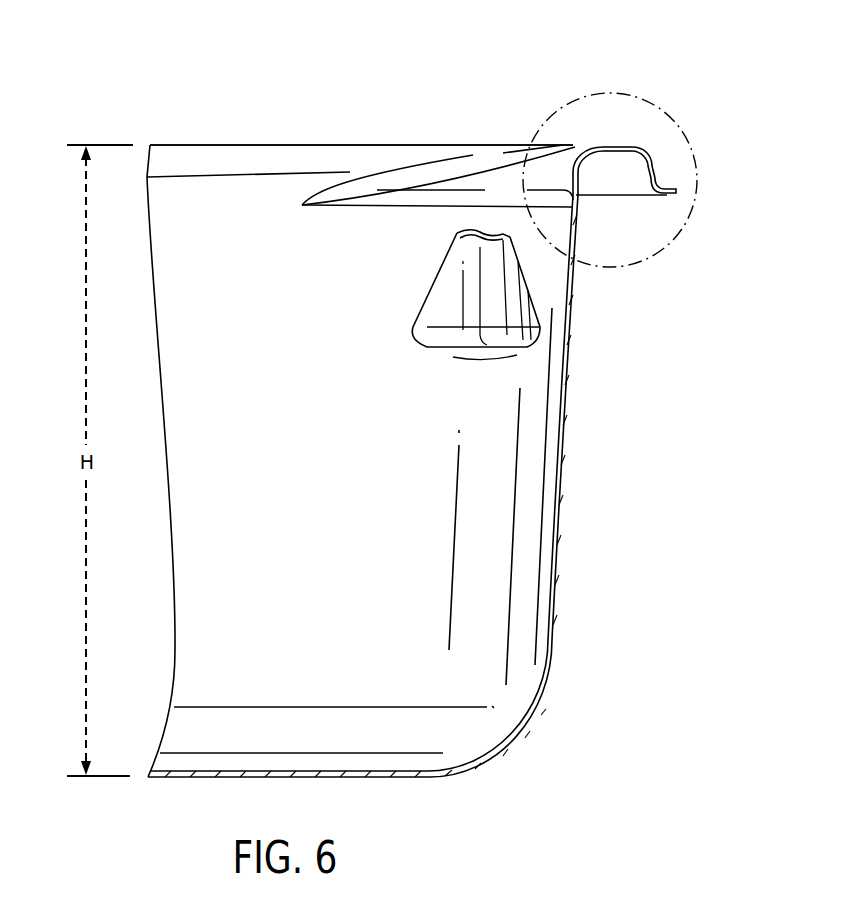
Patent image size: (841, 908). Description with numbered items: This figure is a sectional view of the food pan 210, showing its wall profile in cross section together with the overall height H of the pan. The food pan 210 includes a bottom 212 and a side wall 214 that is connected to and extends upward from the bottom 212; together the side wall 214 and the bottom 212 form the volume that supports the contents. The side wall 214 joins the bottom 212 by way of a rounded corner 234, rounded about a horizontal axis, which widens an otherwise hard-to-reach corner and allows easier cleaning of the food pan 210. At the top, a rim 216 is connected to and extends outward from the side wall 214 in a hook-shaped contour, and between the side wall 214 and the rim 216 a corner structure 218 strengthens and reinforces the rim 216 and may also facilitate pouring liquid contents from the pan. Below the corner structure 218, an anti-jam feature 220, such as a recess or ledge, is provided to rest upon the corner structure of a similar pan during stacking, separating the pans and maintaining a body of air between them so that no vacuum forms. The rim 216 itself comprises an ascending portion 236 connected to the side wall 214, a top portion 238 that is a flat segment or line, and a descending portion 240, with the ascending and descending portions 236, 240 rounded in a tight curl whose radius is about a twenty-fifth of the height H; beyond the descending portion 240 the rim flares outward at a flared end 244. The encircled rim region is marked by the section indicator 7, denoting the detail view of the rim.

The food pan 210 is at (122, 75).
The bottom 212 is at (192, 782).
The side wall 214 is at (564, 503).
The rim 216 is at (291, 160).
The corner structure 218 is at (475, 126).
The anti-jam feature 220 is at (493, 320).
The rounded corner 234 is at (503, 730).
The ascending portion 236 is at (568, 148).
The top portion 238 is at (613, 146).
The descending portion 240 is at (650, 150).
The flared end 244 is at (672, 197).
The section view FIG. 7 indicator 7 is at (598, 93).